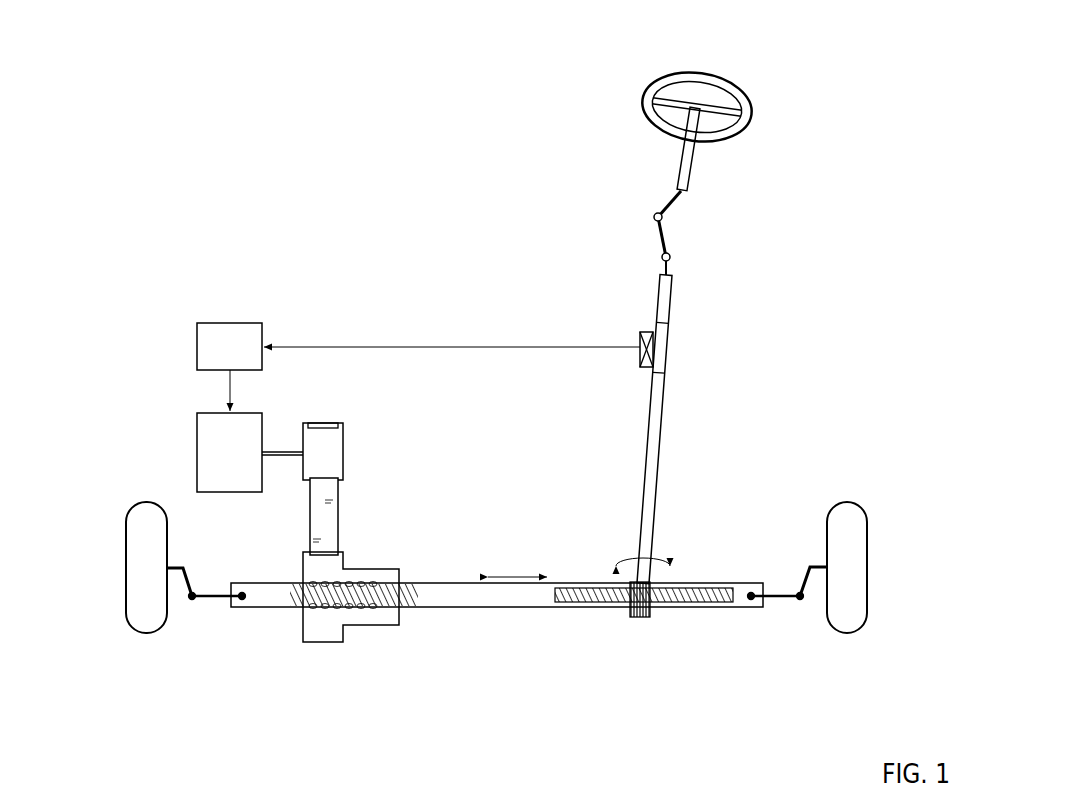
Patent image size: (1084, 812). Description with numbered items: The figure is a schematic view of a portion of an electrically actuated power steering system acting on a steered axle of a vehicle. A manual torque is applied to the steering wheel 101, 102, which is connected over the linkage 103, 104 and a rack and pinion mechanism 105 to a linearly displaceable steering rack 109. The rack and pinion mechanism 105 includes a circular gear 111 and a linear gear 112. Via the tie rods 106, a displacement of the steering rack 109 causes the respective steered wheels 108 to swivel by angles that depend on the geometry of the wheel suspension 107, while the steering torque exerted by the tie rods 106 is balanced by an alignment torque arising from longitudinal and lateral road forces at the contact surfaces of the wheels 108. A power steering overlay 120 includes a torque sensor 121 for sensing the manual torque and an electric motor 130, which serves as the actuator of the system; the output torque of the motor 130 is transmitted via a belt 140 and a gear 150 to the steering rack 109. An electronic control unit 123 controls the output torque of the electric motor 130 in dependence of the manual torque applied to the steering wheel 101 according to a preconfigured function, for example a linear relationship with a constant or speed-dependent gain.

The steering wheel 101 is at (642, 93).
The steering wheel 102 is at (694, 157).
The linkage 103 is at (662, 217).
The linkage 104 is at (663, 398).
The rack and pinion mechanism 105 is at (703, 683).
The tie rods 106 is at (777, 600).
The wheel suspension 107 is at (805, 580).
The steered wheels 108 is at (137, 538).
The steering rack 109 is at (510, 604).
The circular gear 111 is at (642, 618).
The linear gear 112 is at (697, 604).
The power steering overlay 120 is at (364, 275).
The torque sensor 121 is at (648, 332).
The electronic control unit 123 is at (197, 345).
The electric motor 130 is at (197, 428).
The belt 140 is at (343, 500).
The gear 150 is at (355, 643).